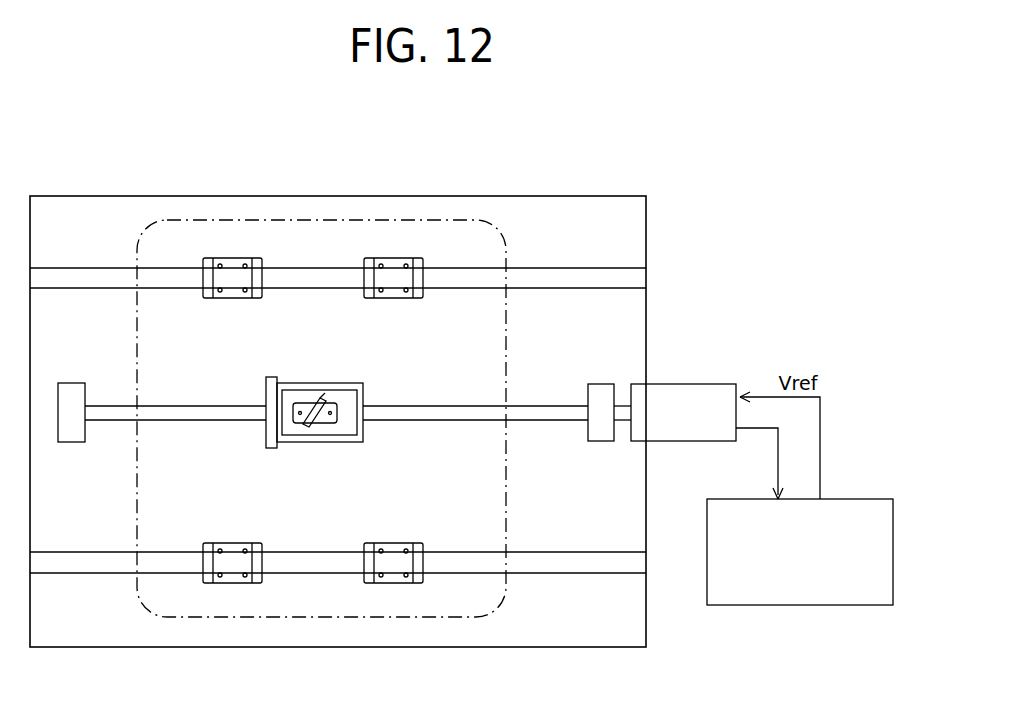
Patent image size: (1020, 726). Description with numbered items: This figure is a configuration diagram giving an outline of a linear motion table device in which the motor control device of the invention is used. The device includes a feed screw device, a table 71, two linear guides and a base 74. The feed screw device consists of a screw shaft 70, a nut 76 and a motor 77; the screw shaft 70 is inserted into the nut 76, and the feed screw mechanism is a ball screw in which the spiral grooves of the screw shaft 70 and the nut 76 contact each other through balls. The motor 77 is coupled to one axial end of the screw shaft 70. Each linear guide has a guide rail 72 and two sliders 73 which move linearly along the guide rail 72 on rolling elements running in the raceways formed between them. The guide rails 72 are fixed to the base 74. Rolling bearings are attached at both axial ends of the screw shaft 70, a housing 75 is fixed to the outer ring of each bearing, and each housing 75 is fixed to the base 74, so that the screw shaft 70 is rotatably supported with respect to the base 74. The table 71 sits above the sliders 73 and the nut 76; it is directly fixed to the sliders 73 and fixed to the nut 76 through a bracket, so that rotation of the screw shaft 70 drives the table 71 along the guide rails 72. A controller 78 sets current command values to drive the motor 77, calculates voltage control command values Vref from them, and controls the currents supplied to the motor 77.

The screw shaft 70 is at (191, 420).
The table 71 is at (445, 220).
The guide rail 72 is at (557, 268).
The slider 73 is at (232, 258).
The base 74 is at (646, 223).
The housing 75 is at (72, 442).
The nut 76 is at (337, 442).
The motor 77 is at (685, 384).
The controller 78 is at (802, 605).